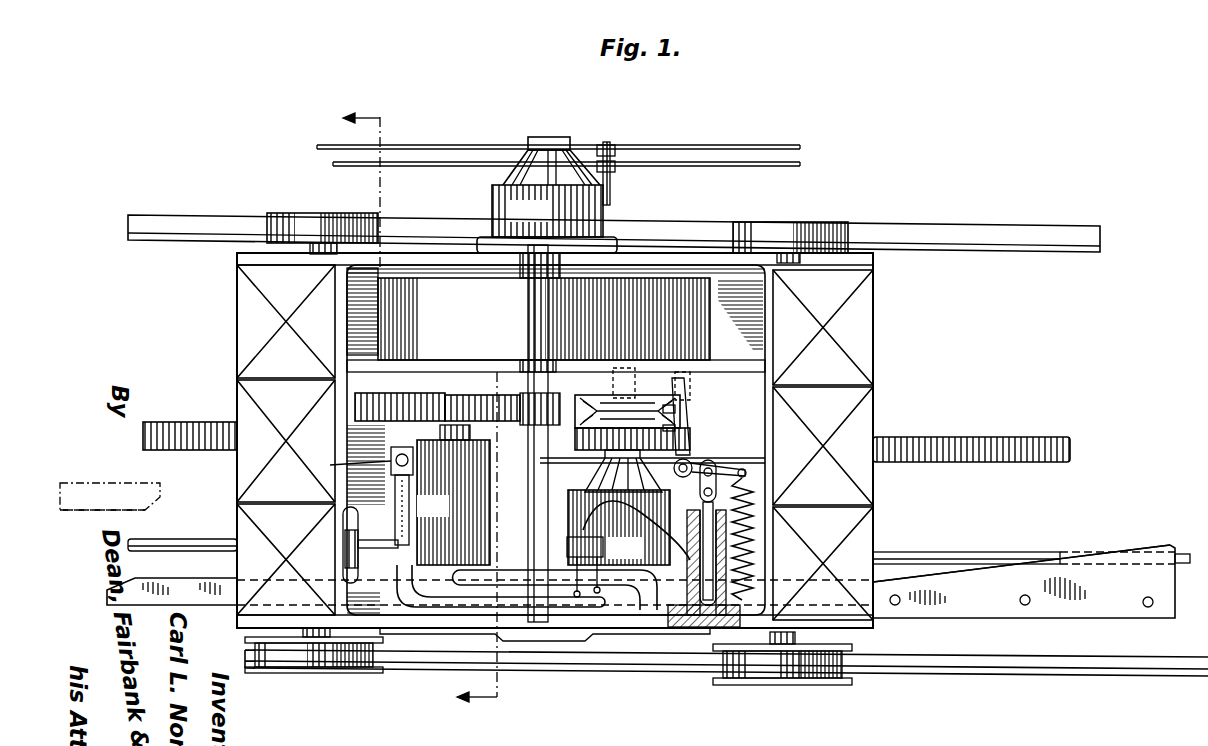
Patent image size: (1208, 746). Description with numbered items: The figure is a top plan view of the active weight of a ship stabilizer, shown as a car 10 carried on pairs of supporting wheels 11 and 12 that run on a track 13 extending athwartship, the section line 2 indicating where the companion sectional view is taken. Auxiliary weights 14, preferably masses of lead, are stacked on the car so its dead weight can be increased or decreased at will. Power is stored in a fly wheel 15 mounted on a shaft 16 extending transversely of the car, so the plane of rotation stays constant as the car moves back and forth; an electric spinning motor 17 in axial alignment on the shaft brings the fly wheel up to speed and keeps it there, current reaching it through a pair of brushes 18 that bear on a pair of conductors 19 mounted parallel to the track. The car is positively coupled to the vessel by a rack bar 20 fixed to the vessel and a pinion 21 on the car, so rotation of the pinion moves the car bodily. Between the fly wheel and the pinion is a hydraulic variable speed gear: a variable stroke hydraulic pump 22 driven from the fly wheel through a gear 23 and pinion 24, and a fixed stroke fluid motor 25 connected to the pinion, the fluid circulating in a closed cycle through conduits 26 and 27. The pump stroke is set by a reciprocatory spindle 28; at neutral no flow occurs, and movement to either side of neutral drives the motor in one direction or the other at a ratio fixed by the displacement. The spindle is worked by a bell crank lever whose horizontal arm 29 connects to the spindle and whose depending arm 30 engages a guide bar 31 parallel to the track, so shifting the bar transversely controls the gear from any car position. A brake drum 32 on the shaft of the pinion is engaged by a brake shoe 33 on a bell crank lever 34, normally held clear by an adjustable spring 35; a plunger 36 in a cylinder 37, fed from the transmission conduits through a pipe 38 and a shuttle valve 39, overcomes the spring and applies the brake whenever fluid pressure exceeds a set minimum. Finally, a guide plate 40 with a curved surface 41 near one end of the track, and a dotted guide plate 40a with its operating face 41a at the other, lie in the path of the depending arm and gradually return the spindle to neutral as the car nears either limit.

The section line 2- 2 is at (420, 408).
The car 10 is at (632, 622).
The supporting wheels 11 is at (335, 673).
The supporting wheels 12 is at (293, 218).
The track 13 is at (972, 247).
The auxiliary weights 14 is at (555, 442).
The fly wheel 15 is at (544, 319).
The shaft 16 is at (530, 451).
The electric spinning motor 17 is at (547, 195).
The brushes 18 is at (617, 163).
The conductors 19 is at (705, 163).
The rack bar 20 is at (215, 416).
The pinion 21 is at (606, 463).
The variable stroke hydraulic pump 22 is at (453, 495).
The gear 23 is at (358, 417).
The pinion 24 is at (487, 393).
The fixed stroke fluid motor 25 is at (619, 527).
The conduit 26 is at (487, 607).
The conduit 27 is at (515, 563).
The reciprocatory spindle 28 is at (345, 456).
The arm 29 is at (404, 490).
The depending arm 30 is at (345, 538).
The guide bar 31 is at (205, 531).
The brake drum 32 is at (602, 406).
The brake shoe 33 is at (675, 412).
The bell crank lever 34 is at (675, 429).
The spring 35 is at (753, 558).
The plunger 36 is at (704, 507).
The cylinder 37 is at (698, 627).
The pipe 38 is at (636, 526).
The shuttle valve 39 is at (585, 565).
The guide plate 40 is at (1006, 606).
The guide plate 40a is at (96, 474).
The curved surface 41 is at (985, 576).
The operating face 41a is at (85, 512).